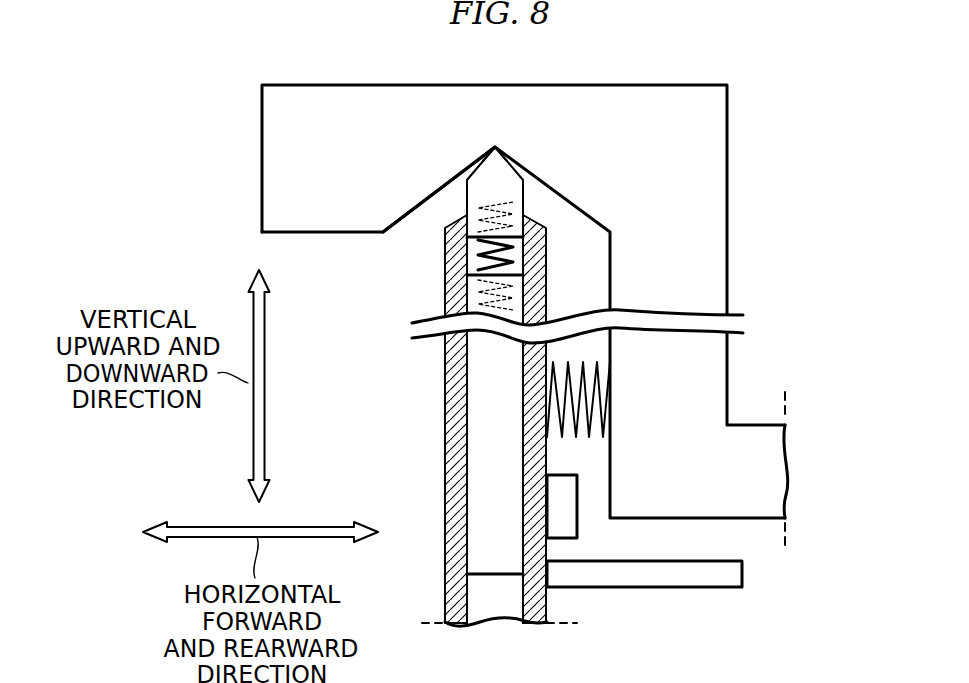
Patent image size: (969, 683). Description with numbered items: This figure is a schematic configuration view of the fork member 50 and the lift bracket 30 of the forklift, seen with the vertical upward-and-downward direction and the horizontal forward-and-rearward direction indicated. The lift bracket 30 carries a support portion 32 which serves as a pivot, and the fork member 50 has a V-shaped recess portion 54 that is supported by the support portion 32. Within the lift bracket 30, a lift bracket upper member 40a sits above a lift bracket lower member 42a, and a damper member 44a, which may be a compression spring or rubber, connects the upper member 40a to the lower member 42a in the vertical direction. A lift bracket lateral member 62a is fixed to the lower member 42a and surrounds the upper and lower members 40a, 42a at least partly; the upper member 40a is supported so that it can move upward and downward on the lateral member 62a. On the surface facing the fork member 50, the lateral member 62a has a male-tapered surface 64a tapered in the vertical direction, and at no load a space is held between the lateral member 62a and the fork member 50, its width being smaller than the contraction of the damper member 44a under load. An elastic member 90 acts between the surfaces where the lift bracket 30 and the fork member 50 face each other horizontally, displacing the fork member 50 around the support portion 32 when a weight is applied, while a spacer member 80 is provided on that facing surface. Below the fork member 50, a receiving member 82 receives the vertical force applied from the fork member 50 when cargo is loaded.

The lift bracket 30 is at (490, 502).
The support portion 32 is at (496, 158).
The lift bracket upper member 40a is at (478, 192).
The lift bracket lower member 42a is at (490, 413).
The damper member 44a is at (485, 253).
The fork member 50 is at (678, 158).
The V-shaped recess portion 54 is at (416, 212).
The lift bracket lateral member 62a is at (449, 370).
The lift bracket lateral member male-tapered surface 64a is at (533, 218).
The spacer member 80 is at (570, 523).
The receiving member 82 is at (730, 574).
The elastic member 90 is at (597, 373).